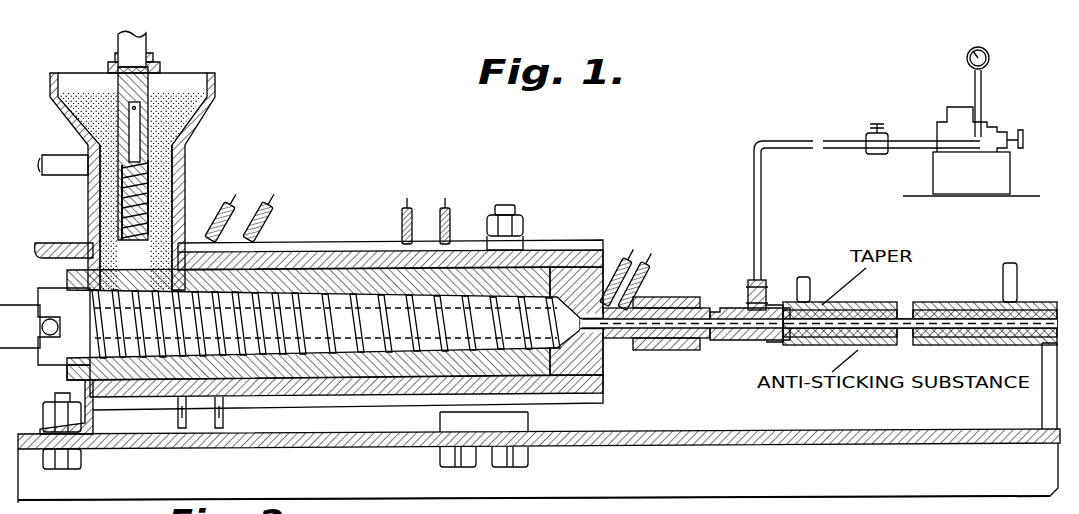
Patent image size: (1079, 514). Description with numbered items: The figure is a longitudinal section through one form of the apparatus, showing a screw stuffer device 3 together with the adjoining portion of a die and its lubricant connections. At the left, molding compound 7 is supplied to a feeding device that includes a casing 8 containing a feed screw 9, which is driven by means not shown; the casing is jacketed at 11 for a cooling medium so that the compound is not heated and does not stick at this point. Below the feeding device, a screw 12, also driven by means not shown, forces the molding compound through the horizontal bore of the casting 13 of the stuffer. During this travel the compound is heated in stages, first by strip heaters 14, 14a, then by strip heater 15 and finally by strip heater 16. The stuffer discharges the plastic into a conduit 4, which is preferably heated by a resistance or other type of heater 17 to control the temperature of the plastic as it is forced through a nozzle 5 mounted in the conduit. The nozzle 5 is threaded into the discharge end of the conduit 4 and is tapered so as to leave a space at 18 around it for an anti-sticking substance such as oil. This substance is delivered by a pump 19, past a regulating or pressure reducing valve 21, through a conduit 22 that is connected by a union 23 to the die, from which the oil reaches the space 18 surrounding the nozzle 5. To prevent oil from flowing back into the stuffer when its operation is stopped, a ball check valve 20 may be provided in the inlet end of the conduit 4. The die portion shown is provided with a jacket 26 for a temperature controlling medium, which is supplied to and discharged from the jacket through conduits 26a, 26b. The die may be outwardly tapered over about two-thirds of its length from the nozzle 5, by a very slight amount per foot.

The screw stuffer device 3 is at (288, 255).
The conduit 4 is at (690, 297).
The nozzle 5 is at (756, 345).
The molding compound 7 is at (200, 118).
The casing 8 is at (183, 160).
The feed screw 9 is at (122, 185).
The jacket 11 is at (170, 182).
The screw 12 is at (300, 305).
The casting 13 is at (310, 397).
The strip heater 14 is at (82, 300).
The strip heater 14a is at (62, 372).
The strip heater 15 is at (360, 295).
The strip heater 16 is at (568, 246).
The heater 17 is at (662, 352).
The space 18 is at (778, 304).
The pump 19 is at (948, 170).
The ball check valve 20 is at (640, 300).
The regulating or pressure reducing valve 21 is at (874, 137).
The conduit 22 is at (763, 182).
The union 23 is at (754, 282).
The jacket 26 is at (877, 302).
The conduit 26a is at (803, 278).
The conduit 26b is at (1010, 264).